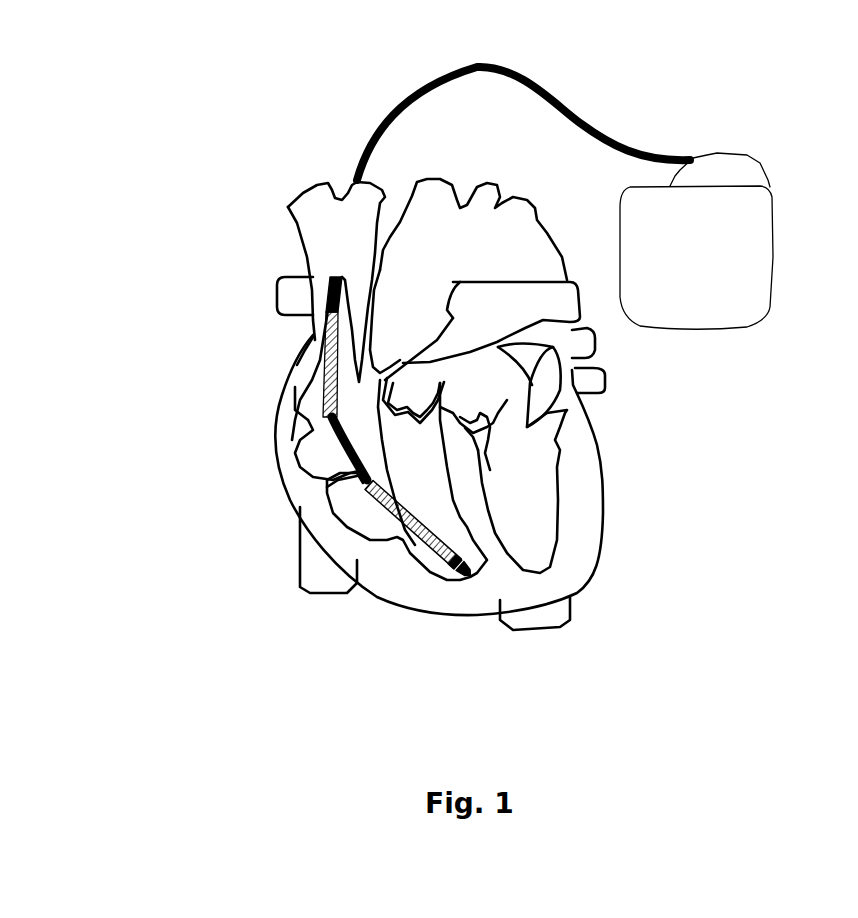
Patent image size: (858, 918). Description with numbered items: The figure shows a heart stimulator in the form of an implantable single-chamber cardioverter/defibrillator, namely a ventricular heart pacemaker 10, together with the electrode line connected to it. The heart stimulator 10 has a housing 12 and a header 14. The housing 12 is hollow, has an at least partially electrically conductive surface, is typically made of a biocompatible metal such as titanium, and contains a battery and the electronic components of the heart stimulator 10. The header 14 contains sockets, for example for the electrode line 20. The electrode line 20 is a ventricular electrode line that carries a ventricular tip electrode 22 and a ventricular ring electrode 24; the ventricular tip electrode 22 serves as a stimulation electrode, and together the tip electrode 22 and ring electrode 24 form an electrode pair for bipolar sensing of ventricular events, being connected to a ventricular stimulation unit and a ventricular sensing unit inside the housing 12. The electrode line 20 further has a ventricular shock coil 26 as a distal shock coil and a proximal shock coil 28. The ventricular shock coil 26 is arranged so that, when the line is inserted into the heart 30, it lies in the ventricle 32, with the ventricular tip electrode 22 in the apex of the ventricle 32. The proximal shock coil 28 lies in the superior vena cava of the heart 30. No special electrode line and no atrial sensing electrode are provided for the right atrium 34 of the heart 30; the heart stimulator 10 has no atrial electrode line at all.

The ventricular heart pacemaker 10 is at (741, 370).
The housing 12 is at (748, 218).
The header 14 is at (725, 163).
The electrode line 20 is at (415, 92).
The ventricular tip electrode 22 is at (470, 572).
The ventricular ring electrode 24 is at (455, 568).
The ventricular shock coil 26 is at (400, 527).
The proximal shock coil 28 is at (330, 365).
The heart 30 is at (232, 232).
The ventricle 32 is at (345, 500).
The right atrium 34 is at (310, 443).